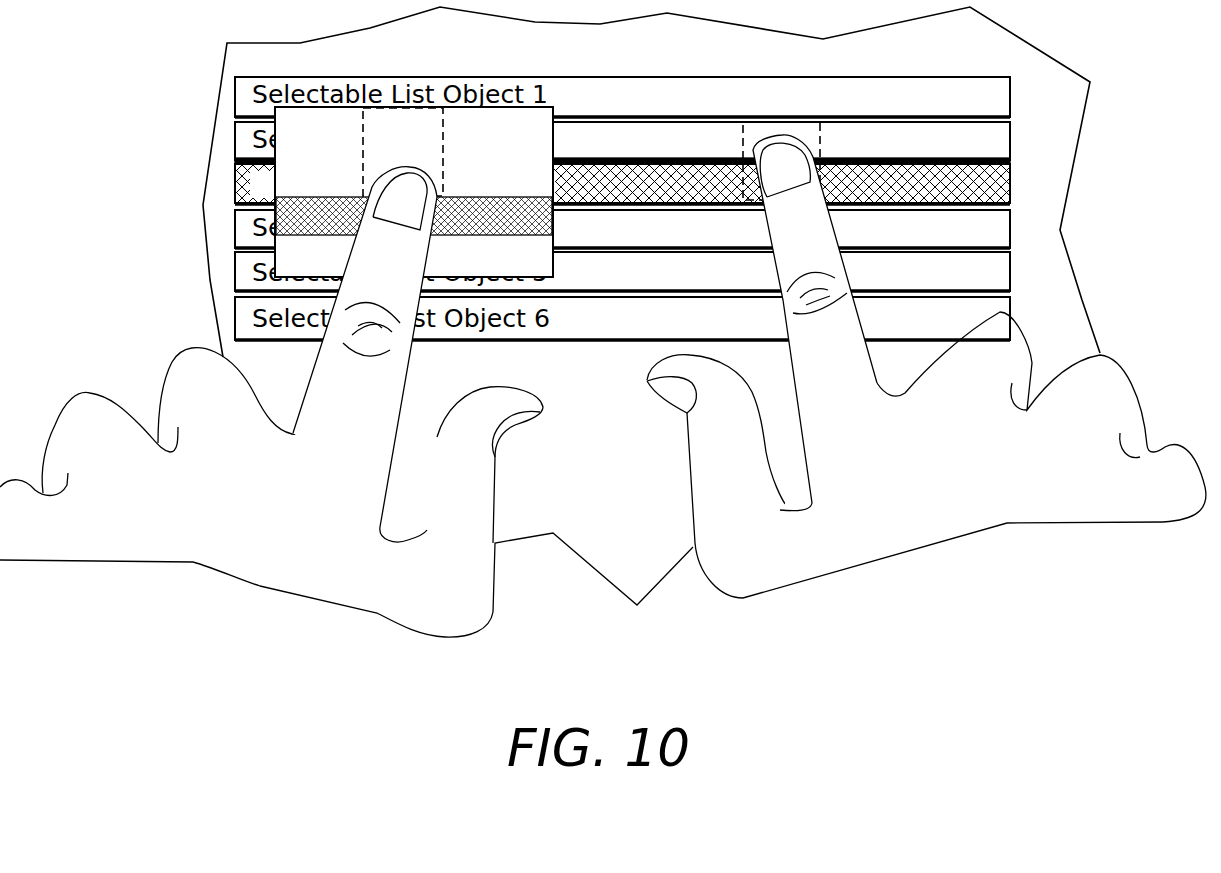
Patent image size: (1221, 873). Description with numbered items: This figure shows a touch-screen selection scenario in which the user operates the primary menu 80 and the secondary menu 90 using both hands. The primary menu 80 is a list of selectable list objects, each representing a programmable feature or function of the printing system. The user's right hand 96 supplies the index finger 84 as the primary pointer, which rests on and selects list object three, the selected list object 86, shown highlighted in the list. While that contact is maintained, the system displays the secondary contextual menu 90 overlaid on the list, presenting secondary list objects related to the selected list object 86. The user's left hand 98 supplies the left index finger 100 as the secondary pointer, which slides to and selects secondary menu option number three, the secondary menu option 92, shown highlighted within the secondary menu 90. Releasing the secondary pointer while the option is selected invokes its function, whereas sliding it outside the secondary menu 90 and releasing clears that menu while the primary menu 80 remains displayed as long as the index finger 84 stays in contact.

The menu 80 is at (362, 50).
The secondary contextual menu 90 is at (459, 151).
The selected list object 86 is at (1010, 184).
The secondary menu option 92 is at (550, 215).
The index finger 84 is at (866, 307).
The left index finger 100 is at (392, 390).
The left hand 98 is at (346, 410).
The right hand 96 is at (926, 388).